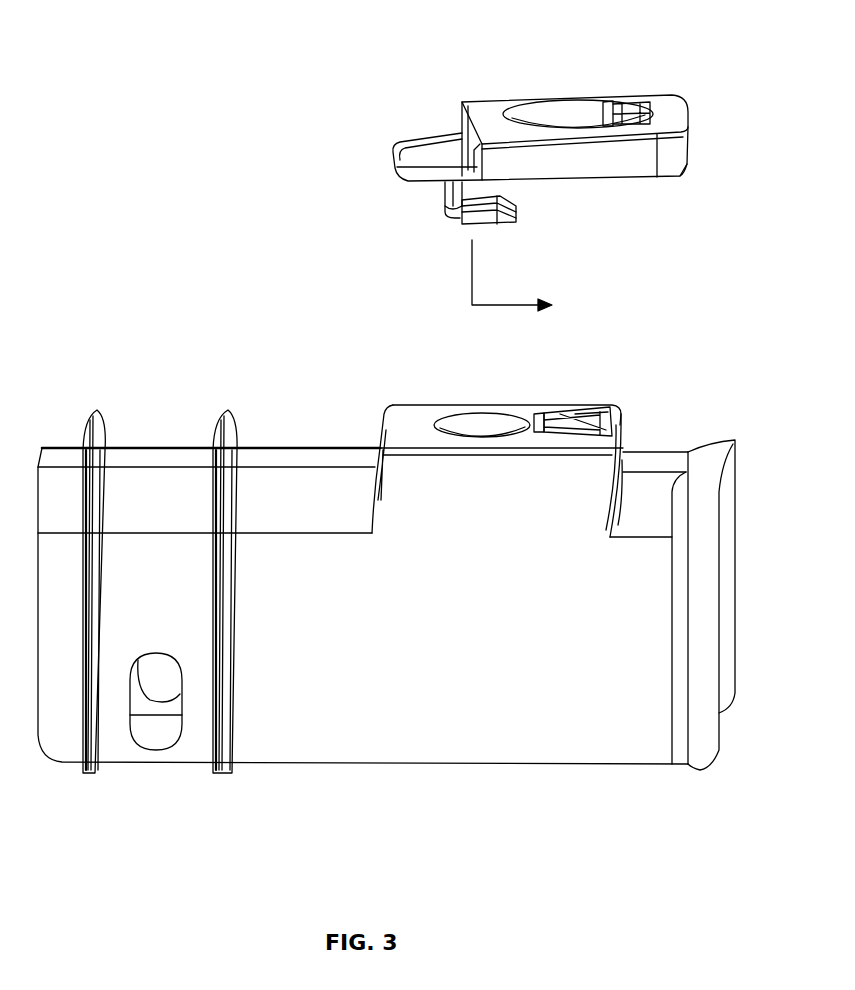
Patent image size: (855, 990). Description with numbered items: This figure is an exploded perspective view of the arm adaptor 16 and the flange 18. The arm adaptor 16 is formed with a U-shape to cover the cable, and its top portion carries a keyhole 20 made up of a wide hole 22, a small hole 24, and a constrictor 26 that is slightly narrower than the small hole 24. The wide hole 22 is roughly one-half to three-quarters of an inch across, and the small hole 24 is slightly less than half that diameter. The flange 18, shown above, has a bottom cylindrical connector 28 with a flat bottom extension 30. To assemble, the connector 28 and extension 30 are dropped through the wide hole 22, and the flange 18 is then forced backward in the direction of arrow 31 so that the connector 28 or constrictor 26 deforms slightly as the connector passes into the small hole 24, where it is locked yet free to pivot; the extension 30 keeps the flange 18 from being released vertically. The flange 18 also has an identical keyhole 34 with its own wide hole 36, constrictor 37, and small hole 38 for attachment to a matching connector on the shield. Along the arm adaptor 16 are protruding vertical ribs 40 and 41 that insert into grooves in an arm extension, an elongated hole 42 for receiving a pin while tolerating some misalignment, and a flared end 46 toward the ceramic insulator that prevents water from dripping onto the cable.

The arm adaptor 16 is at (395, 587).
The flange 18 is at (683, 160).
The keyhole 20 is at (497, 424).
The wide hole 22 is at (477, 433).
The small hole 24 is at (572, 418).
The constrictor 26 is at (530, 420).
The cylindrical connector 28 is at (440, 202).
The flat bottom extension 30 is at (520, 215).
The arrow 31 is at (505, 305).
The keyhole 34 is at (560, 128).
The wide hole 36 is at (548, 112).
The constrictor 37 is at (607, 108).
The small hole 38 is at (640, 108).
The vertical rib 40 is at (99, 408).
The vertical rib 41 is at (231, 410).
The hole 42 is at (172, 748).
The flared end 46 is at (720, 447).